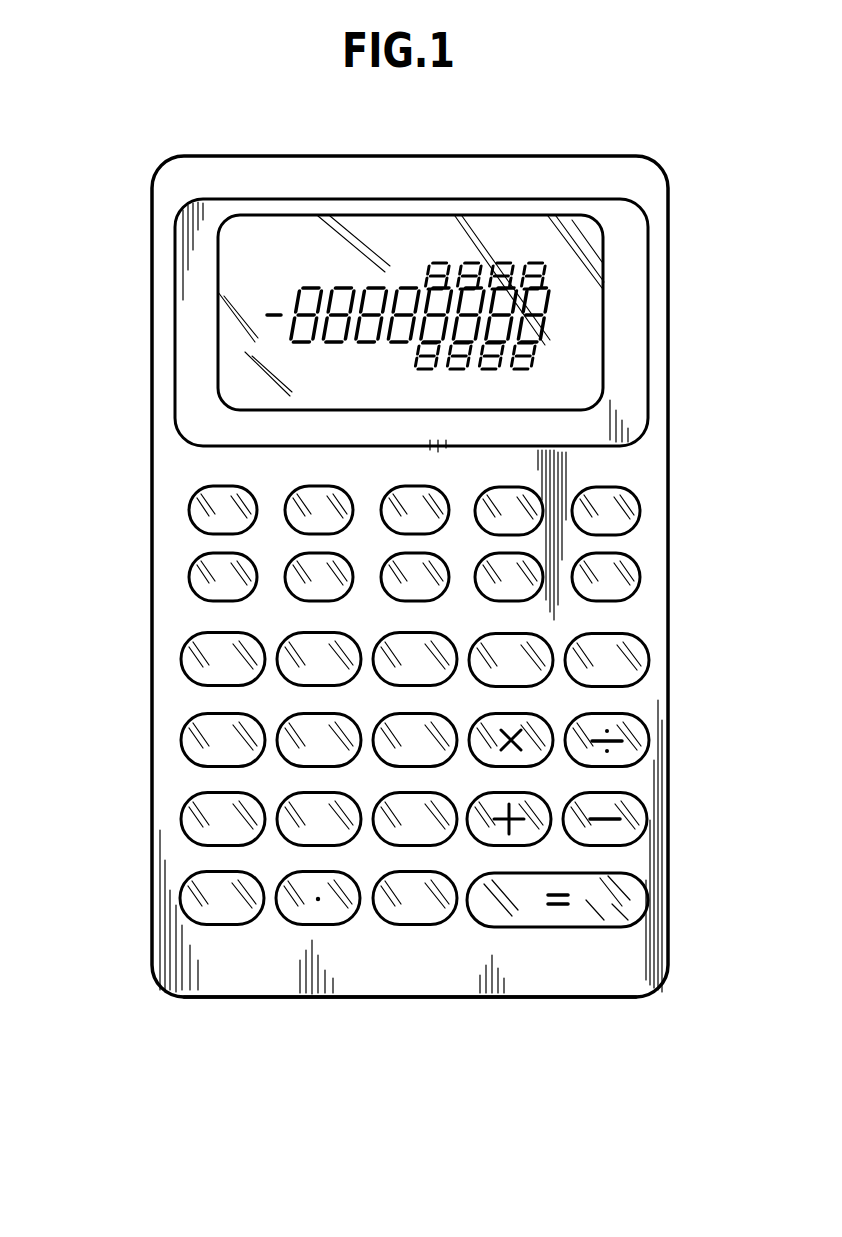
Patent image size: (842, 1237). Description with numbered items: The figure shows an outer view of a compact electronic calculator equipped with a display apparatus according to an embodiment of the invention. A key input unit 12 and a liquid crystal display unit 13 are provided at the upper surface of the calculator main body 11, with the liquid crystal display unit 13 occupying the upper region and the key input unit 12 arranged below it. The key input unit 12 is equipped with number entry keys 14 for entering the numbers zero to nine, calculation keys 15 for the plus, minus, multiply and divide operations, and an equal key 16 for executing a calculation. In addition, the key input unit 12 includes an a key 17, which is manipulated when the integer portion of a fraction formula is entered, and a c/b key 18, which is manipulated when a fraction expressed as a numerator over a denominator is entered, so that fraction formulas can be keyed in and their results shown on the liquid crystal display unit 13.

The calculator main body 11 is at (674, 482).
The key input unit 12 is at (410, 986).
The liquid crystal display unit 13 is at (636, 282).
The number entry keys 14 is at (140, 633).
The calculation keys 15 is at (682, 707).
The equal key 16 is at (632, 903).
The a key 17 is at (191, 494).
The c/b key 18 is at (293, 487).